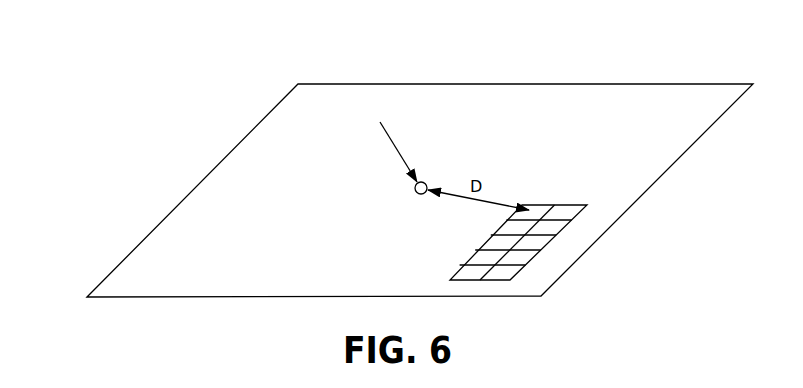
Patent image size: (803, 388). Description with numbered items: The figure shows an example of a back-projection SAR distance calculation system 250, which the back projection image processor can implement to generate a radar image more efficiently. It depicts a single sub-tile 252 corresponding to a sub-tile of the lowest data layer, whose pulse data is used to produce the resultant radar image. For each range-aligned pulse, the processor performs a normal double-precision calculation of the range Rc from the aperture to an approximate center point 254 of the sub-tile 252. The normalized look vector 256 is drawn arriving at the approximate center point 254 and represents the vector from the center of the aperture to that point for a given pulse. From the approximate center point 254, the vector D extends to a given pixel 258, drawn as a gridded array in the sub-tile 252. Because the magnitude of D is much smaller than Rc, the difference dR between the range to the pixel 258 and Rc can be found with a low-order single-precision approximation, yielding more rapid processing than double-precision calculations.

The back-projection SAR distance calculation system 250 is at (93, 45).
The sub-tile 252 is at (181, 202).
The approximate center point 254 is at (416, 193).
The normalized look vector 256 is at (381, 135).
The pixel 258 is at (565, 191).